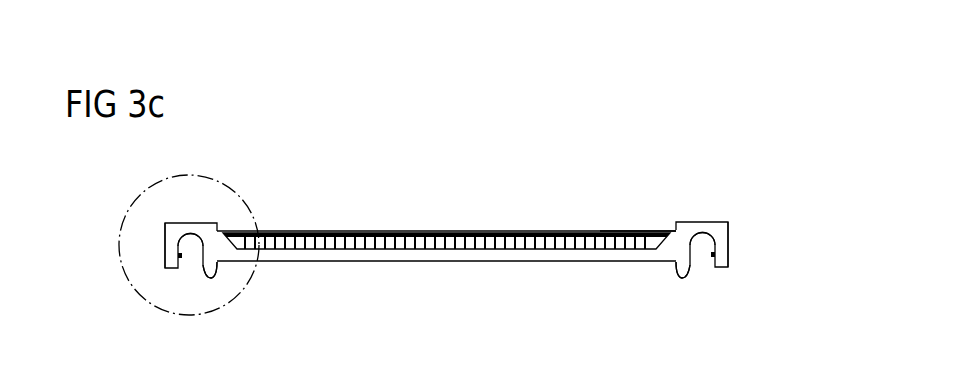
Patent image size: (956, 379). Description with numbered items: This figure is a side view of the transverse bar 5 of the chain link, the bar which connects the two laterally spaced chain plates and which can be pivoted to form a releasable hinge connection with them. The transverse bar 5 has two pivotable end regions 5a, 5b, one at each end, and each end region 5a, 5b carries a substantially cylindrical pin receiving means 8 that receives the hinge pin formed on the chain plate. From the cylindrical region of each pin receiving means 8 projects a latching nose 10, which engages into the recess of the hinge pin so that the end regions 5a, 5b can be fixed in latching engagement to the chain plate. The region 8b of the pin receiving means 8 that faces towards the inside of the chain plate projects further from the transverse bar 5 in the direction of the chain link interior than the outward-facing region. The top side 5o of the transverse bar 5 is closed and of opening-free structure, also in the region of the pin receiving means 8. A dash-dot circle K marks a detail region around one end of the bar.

The transverse bar 5 is at (444, 229).
The end region of the transverse bar 5a is at (748, 222).
The end region of the transverse bar 5b is at (142, 230).
The top side of the transverse bar 5o is at (633, 216).
The pin receiving means 8 is at (190, 240).
The region of the pin receiving means facing towards the inside of the chain plate 8b is at (214, 277).
The latching nose 10 is at (187, 262).
The detail region K is at (257, 207).